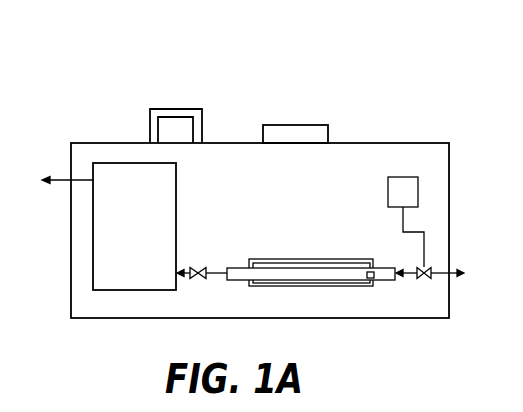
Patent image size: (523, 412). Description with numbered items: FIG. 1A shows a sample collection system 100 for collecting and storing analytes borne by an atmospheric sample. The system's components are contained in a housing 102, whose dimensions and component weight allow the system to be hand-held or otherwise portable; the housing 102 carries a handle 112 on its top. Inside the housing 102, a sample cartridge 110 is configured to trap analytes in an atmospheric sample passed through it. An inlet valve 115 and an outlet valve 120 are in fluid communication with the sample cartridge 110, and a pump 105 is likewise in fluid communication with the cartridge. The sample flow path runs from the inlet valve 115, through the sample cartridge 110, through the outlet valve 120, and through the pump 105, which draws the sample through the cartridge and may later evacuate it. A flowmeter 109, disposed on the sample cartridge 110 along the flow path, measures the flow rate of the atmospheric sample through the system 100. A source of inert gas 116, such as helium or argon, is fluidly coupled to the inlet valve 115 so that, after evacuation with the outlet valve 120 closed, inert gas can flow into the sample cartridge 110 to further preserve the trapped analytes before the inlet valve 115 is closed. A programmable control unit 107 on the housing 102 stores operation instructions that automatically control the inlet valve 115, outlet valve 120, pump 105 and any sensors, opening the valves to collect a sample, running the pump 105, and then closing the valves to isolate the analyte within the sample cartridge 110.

The sample collection system 100 is at (307, 50).
The housing 102 is at (400, 143).
The pump 105 is at (176, 178).
The programmable control unit 107 is at (320, 125).
The flowmeter 109 is at (372, 280).
The sample cartridge 110 is at (320, 259).
The handle 112 is at (175, 108).
The inlet valve 115 is at (424, 279).
The source of inert gas 116 is at (418, 192).
The outlet valve 120 is at (200, 267).